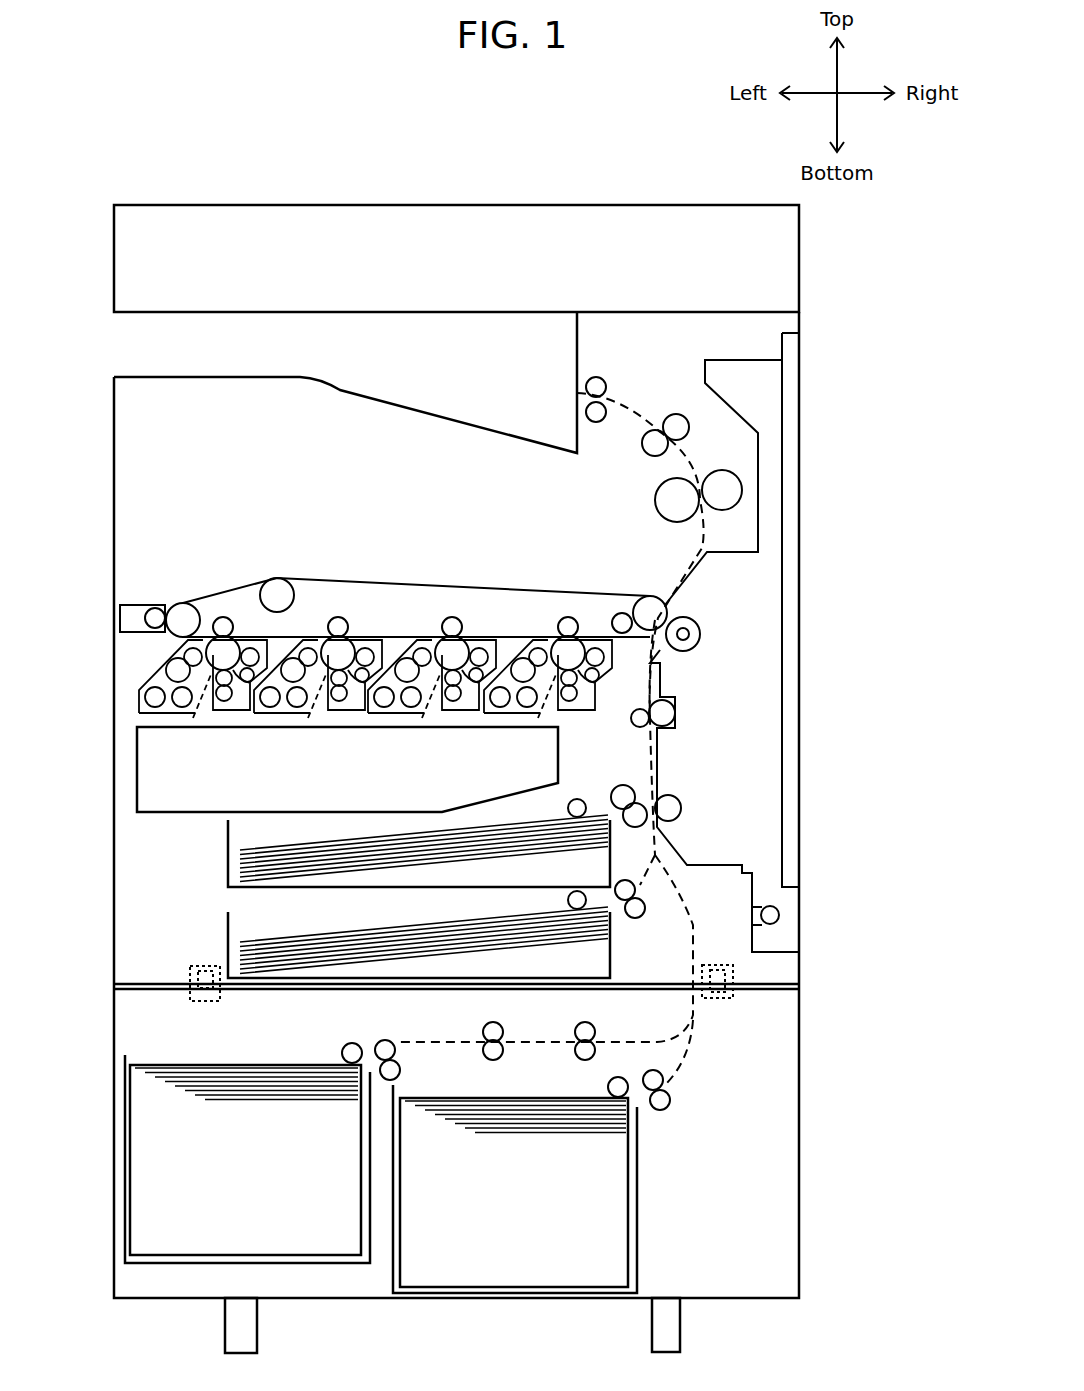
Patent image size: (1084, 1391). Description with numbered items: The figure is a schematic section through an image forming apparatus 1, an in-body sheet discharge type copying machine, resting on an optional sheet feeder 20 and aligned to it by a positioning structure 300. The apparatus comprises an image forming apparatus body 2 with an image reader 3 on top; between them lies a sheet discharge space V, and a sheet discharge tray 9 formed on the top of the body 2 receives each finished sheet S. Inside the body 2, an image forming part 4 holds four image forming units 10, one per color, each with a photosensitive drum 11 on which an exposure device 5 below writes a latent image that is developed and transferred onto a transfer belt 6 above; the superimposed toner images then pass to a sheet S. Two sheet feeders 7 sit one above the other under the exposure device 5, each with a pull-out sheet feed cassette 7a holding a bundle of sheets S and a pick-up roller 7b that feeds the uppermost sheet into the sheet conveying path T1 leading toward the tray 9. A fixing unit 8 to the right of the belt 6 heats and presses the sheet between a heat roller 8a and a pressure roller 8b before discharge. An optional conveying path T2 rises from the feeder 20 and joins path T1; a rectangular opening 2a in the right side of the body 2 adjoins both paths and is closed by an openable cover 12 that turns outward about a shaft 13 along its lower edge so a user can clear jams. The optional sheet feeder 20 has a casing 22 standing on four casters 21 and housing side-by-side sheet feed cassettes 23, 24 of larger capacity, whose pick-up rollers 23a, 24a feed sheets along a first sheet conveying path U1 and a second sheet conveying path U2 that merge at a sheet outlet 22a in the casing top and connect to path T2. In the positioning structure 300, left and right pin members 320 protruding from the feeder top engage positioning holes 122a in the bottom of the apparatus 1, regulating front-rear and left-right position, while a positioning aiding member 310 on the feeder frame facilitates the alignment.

The image forming apparatus 1 is at (156, 182).
The image forming apparatus body 2 is at (112, 518).
The opening 2a is at (790, 345).
The image reader 3 is at (650, 204).
The image forming part 4 is at (393, 625).
The exposure device 5 is at (137, 790).
The transfer belt 6 is at (405, 582).
The sheet feeder 7 is at (379, 963).
The sheet feed cassette 7a is at (181, 879).
The pick-up roller 7b is at (546, 854).
The fixing unit 8 is at (667, 456).
The heat roller 8a is at (660, 490).
The pressure roller 8b is at (696, 460).
The sheet discharge tray 9 is at (378, 393).
The image forming unit 10 is at (550, 625).
The photosensitive drum 11 is at (578, 672).
The openable cover 12 is at (800, 492).
The shaft 13 is at (760, 914).
The optional sheet feeder 20 is at (475, 1177).
The caster 21 is at (452, 1325).
The casing 22 is at (475, 1177).
The sheet outlet 22a is at (700, 990).
The sheet feed cassette 23 is at (125, 1130).
The pick-up roller 23a is at (357, 1043).
The sheet feed cassette 24 is at (637, 1215).
The pick-up roller 24a is at (622, 1077).
The positioning hole 122a is at (469, 945).
The positioning structure 300 is at (778, 965).
The positioning aiding member 310 is at (461, 967).
The pin member 320 is at (461, 1000).
The sheet S is at (380, 973).
The sheet conveying path T1 is at (653, 776).
The optional conveying path T2 is at (692, 946).
The first sheet conveying path U1 is at (543, 1035).
The second sheet conveying path U2 is at (690, 1065).
The sheet discharge space V is at (441, 366).